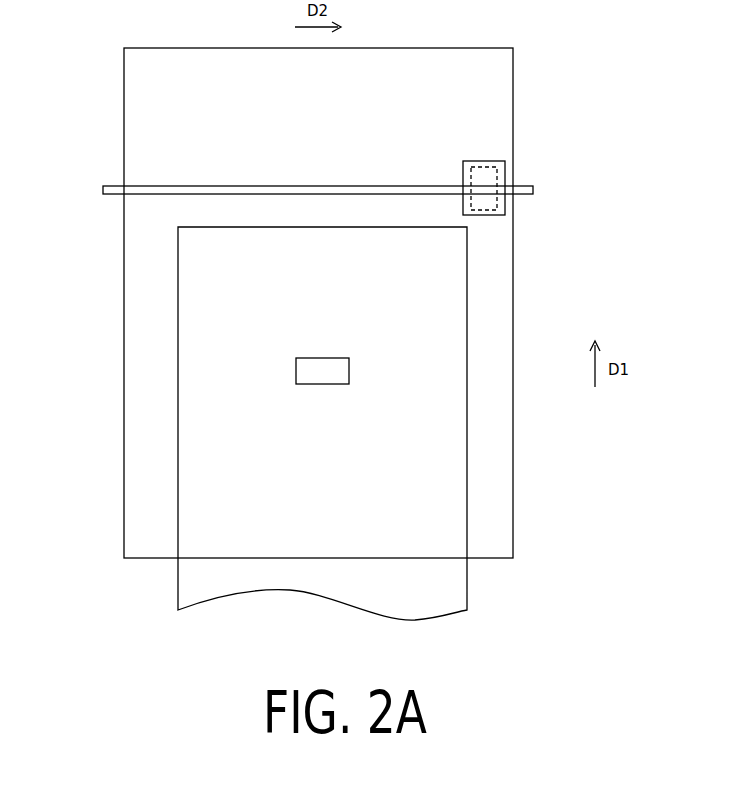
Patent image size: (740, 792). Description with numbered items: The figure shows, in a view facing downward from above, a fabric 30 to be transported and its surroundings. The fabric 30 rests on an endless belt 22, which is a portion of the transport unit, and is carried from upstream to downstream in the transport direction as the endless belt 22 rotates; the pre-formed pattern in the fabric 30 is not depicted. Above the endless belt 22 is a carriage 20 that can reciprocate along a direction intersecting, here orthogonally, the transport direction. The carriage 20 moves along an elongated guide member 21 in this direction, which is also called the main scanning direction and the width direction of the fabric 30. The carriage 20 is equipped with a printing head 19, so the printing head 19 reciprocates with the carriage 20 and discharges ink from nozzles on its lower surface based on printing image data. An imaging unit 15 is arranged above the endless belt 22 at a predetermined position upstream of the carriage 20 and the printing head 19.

The imaging unit 15 is at (313, 360).
The printing head 19 is at (500, 214).
The carriage 20 is at (490, 161).
The guide member 21 is at (118, 185).
The endless belt 22 is at (511, 471).
The fabric 30 is at (185, 572).